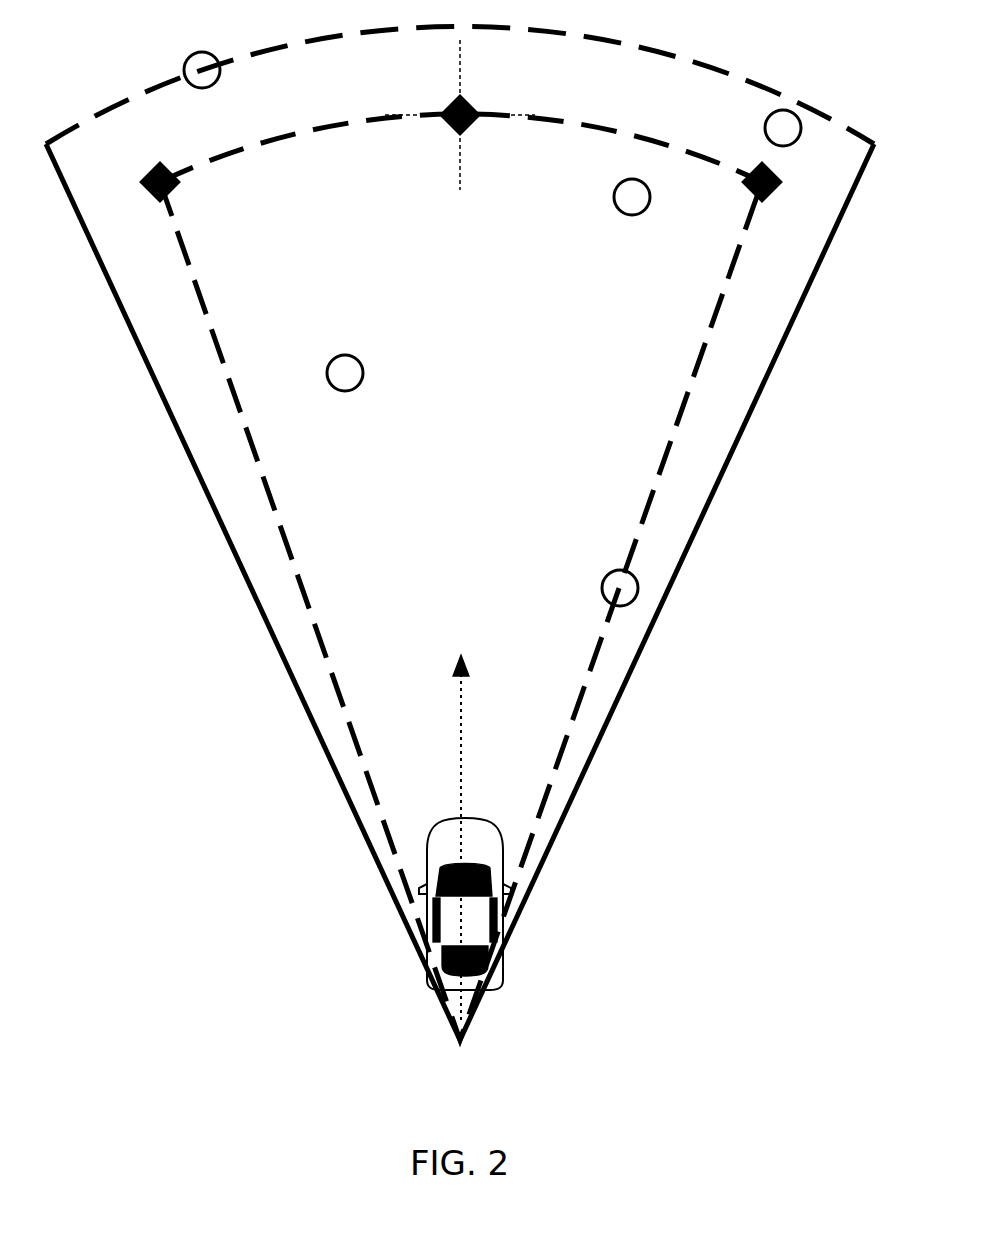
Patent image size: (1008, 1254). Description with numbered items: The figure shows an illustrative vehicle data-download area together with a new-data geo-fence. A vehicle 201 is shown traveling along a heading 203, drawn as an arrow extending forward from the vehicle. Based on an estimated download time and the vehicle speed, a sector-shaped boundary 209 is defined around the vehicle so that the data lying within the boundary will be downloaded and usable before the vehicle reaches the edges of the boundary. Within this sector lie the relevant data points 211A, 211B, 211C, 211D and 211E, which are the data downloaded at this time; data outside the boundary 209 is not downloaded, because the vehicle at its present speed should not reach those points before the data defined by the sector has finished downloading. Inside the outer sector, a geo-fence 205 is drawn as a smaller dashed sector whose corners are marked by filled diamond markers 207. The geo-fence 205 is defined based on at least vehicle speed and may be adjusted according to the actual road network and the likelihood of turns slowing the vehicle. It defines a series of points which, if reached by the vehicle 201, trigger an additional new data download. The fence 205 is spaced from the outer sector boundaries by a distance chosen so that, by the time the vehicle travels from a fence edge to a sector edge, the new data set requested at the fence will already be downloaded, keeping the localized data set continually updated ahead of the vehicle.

The vehicle 201 is at (473, 921).
The heading 203 is at (455, 660).
The geo-fence 205 is at (662, 440).
The boundary corner markers 207 is at (755, 190).
The boundary 209 is at (227, 540).
The data point 211A is at (602, 590).
The data point 211B is at (363, 372).
The data point 211C is at (614, 196).
The data point 211D is at (765, 130).
The data point 211E is at (190, 54).